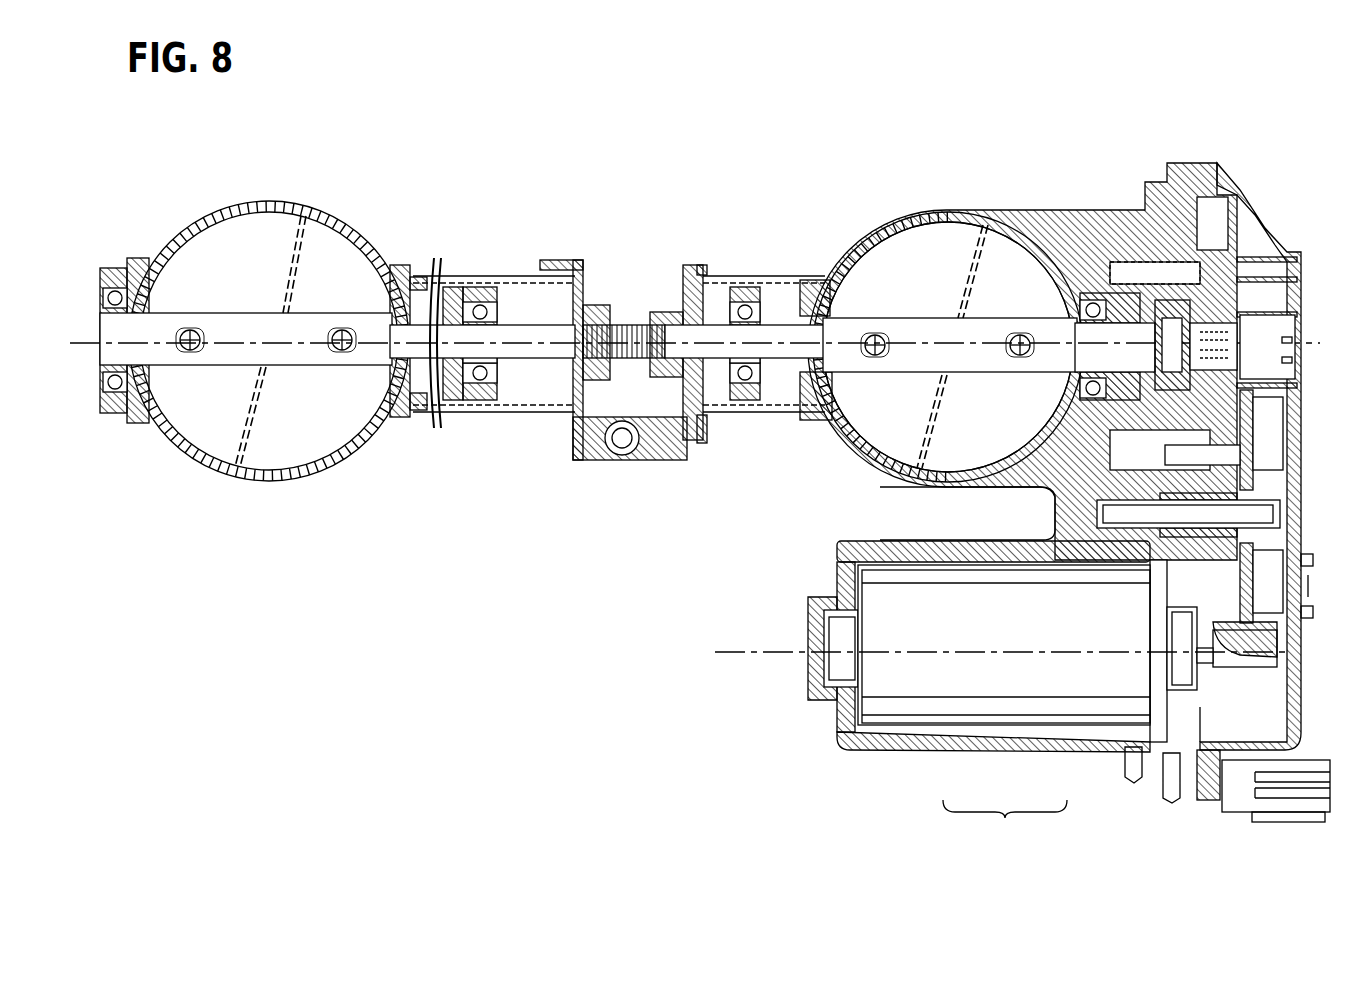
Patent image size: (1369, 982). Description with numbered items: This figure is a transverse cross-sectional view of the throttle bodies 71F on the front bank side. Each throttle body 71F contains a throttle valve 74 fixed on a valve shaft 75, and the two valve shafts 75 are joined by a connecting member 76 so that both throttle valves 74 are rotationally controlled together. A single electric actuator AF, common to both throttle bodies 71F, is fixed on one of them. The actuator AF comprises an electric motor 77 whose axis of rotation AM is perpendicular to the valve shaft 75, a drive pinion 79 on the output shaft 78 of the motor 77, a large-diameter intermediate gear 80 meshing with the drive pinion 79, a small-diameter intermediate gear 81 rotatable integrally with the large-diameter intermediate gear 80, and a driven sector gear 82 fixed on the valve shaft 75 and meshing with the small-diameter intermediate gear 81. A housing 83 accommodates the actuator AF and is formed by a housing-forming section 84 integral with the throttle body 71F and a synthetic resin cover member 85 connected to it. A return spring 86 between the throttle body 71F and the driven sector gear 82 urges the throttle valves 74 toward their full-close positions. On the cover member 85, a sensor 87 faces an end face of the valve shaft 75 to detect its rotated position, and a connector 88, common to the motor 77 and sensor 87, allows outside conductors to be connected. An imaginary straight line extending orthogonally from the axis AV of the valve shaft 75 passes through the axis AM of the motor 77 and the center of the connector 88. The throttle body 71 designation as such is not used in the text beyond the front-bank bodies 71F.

The throttle body (first bore) 71 is at (355, 242).
The throttle body 71F is at (875, 232).
The throttle valve 74 is at (272, 245).
The valve shaft 75 is at (453, 335).
The connecting member 76 is at (663, 462).
The electric motor 77 is at (1002, 636).
The output shaft 78 is at (1282, 645).
The drive pinion 79 is at (1295, 628).
The large-diameter intermediate gear 80 is at (1300, 405).
The small-diameter intermediate gear 81 is at (1200, 550).
The driven sector gear 82 is at (1265, 470).
The housing 83 is at (1005, 824).
The housing-forming section 84 is at (978, 750).
The cover member 85 is at (1200, 797).
The return spring 86 is at (1110, 258).
The sensor 87 is at (1270, 333).
The connector 88 is at (1262, 808).
The axis of the valve shaft AV is at (800, 425).
The axis of the electric motor AM is at (730, 657).
The electric actuator AF is at (895, 760).